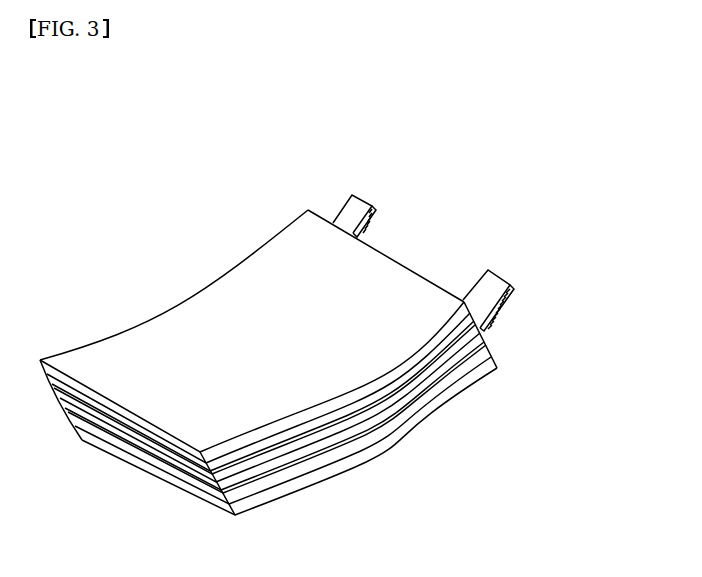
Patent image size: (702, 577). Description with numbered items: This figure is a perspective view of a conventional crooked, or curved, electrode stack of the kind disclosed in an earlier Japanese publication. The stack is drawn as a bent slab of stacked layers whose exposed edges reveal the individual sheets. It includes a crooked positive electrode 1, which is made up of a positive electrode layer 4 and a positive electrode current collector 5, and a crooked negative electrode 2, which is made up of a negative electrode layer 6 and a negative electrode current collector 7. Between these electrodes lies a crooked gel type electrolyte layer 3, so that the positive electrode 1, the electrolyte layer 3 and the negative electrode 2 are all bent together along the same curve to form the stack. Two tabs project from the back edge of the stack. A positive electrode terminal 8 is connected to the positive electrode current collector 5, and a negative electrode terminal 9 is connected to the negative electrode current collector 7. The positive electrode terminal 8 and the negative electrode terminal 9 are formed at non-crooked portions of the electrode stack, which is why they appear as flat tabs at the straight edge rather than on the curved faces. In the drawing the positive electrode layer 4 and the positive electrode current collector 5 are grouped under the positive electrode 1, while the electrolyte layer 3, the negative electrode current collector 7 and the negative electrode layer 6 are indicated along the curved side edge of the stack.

The positive electrode 1 is at (263, 337).
The negative electrode 2 is at (319, 414).
The gel type electrolyte layer 3 is at (483, 333).
The positive electrode layer 4 is at (487, 241).
The positive electrode current collector 5 is at (457, 305).
The negative electrode layer 6 is at (310, 430).
The negative electrode current collector 7 is at (491, 347).
The positive electrode terminal 8 is at (372, 206).
The negative electrode terminal 9 is at (503, 276).